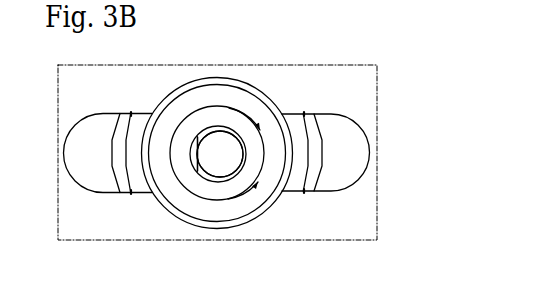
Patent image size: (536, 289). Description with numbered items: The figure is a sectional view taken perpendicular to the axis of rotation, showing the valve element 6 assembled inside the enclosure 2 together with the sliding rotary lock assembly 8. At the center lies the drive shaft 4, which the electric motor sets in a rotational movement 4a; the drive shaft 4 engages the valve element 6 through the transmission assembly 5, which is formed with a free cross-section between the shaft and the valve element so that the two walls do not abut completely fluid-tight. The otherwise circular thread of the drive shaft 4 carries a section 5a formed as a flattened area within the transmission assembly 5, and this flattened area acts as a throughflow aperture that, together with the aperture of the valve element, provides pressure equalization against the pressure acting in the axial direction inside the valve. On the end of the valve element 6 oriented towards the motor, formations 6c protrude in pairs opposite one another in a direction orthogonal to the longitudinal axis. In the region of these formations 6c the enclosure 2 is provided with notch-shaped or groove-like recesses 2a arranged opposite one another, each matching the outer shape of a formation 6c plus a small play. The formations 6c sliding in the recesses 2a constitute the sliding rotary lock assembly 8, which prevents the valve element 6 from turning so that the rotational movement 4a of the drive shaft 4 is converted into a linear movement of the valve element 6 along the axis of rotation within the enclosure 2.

The enclosure 2 is at (363, 108).
The recesses 2a is at (141, 113).
The drive shaft 4 is at (222, 160).
The transmission assembly 5 is at (220, 154).
The rotational movement 4a is at (229, 108).
The flattened area section 5a is at (190, 171).
The valve element 6 is at (198, 100).
The formations 6c is at (119, 141).
The sliding rotary lock assembly 8 is at (287, 197).